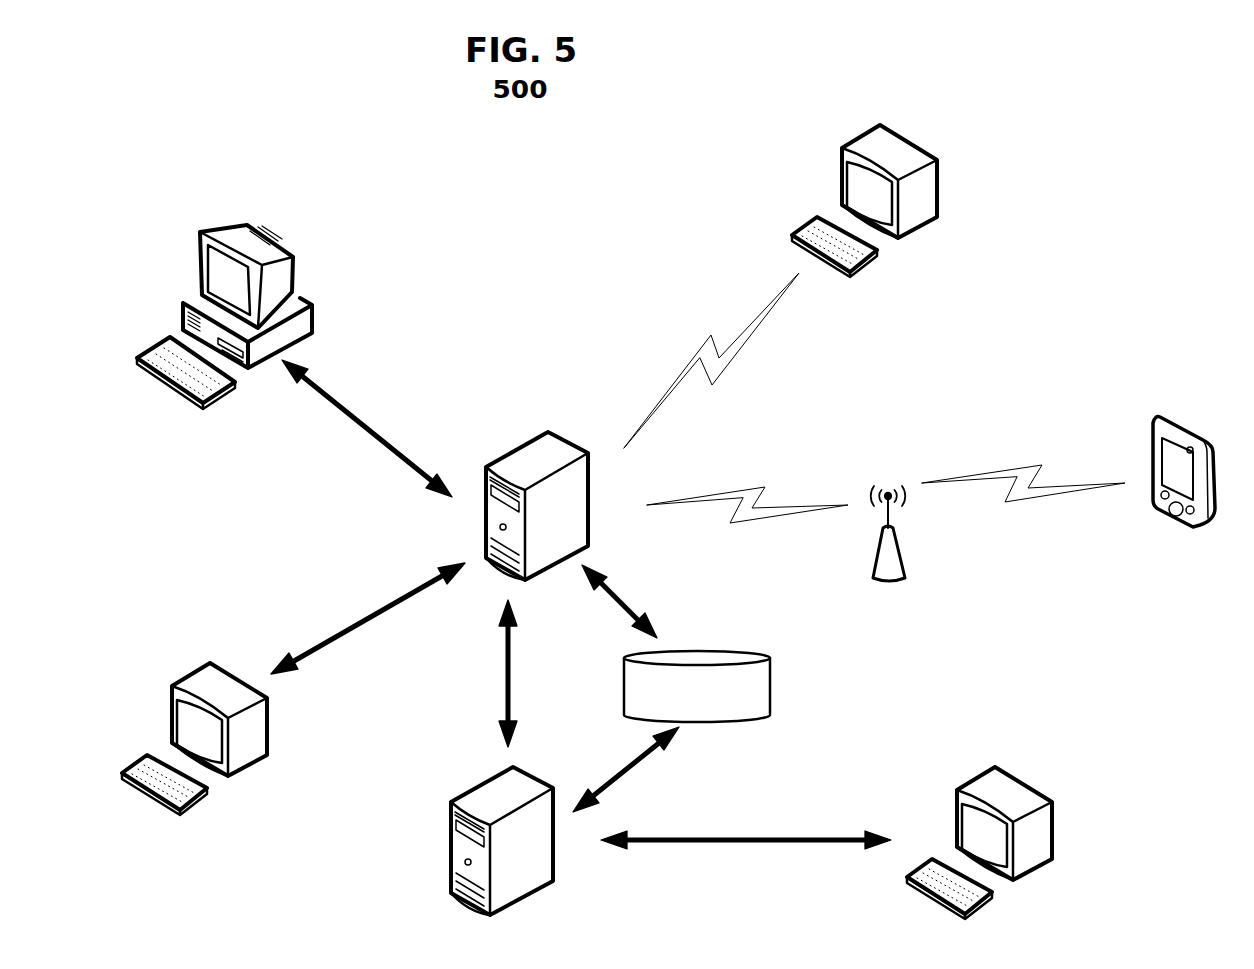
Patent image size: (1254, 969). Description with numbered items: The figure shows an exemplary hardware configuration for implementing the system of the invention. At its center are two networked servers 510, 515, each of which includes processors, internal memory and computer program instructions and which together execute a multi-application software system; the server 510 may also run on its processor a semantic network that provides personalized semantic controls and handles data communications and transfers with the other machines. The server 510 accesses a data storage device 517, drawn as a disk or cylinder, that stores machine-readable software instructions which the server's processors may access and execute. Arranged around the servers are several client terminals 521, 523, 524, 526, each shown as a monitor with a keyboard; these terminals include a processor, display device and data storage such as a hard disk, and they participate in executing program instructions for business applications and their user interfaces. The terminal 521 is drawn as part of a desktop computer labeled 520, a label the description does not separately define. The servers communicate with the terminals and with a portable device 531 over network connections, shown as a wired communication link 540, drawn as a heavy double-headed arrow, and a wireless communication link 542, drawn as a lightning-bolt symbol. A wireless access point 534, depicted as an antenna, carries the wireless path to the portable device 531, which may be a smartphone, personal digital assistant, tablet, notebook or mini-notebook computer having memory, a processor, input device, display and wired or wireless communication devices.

The networked server 510 is at (537, 506).
The networked server 515 is at (502, 841).
The data storage device 517 is at (697, 686).
The client computer 520 is at (274, 305).
The client terminal 521 is at (245, 265).
The client terminal 523 is at (194, 718).
The client terminal 524 is at (979, 822).
The client terminal 526 is at (864, 181).
The portable device 531 is at (1156, 458).
The wireless access point 534 is at (912, 533).
The wired communication link 540 is at (337, 397).
The wireless communication link 542 is at (711, 360).